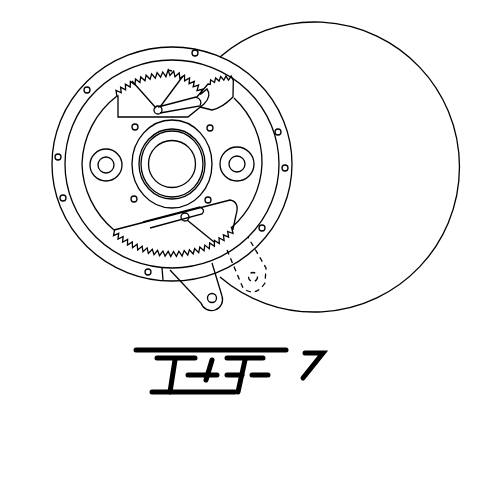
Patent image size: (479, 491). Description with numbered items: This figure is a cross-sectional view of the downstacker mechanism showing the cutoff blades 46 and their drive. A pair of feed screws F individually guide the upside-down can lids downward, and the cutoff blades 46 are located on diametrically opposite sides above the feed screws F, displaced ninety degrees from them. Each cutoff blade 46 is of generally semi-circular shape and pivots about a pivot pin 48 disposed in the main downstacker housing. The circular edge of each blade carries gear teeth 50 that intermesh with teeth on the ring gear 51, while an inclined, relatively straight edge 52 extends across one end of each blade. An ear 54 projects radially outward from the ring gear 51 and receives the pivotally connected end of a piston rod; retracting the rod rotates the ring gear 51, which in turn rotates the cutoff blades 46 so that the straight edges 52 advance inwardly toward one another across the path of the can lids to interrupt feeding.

The cutoff blade 46 is at (127, 98).
The pivot pin 48 is at (158, 106).
The gear teeth 50 is at (197, 100).
The ring gear 51 is at (199, 77).
The relatively straight edge 52 is at (118, 105).
The ear 54 is at (214, 305).
The feed screw F is at (90, 168).